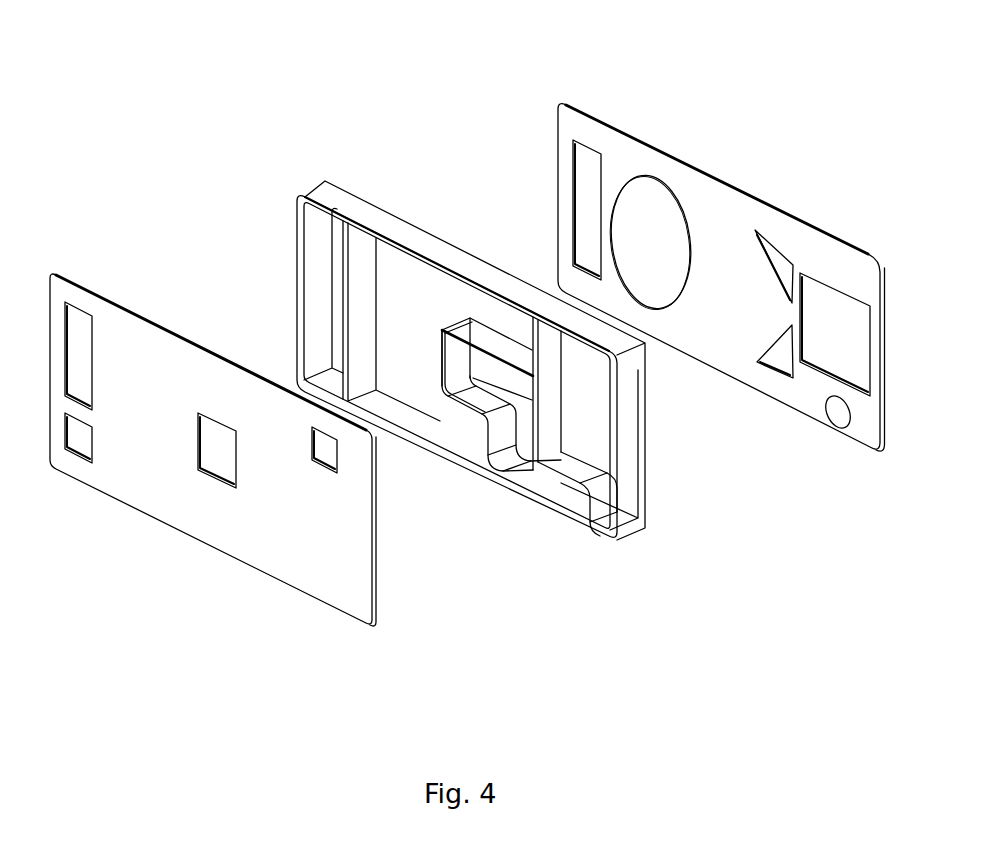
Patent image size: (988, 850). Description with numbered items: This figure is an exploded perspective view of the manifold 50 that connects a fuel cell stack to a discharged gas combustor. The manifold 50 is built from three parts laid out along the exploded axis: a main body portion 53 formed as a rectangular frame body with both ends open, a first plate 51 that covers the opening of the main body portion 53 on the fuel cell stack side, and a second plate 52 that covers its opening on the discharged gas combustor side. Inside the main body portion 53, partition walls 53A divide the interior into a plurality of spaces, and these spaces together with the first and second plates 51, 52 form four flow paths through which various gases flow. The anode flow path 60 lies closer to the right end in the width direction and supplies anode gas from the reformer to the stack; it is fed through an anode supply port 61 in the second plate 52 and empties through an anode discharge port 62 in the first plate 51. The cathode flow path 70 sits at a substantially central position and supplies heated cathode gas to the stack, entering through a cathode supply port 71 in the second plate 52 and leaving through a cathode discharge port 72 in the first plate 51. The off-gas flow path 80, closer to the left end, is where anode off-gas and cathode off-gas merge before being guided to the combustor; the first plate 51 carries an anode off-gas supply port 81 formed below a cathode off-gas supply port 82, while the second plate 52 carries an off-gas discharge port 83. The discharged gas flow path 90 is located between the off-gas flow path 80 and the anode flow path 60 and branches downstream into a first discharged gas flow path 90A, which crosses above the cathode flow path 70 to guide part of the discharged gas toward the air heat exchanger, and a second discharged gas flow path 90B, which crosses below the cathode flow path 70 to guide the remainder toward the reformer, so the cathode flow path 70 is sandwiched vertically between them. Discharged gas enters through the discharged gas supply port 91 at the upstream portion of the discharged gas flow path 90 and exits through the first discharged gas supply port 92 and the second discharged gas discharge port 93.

The manifold 50 is at (302, 125).
The first plate 51 is at (150, 313).
The second plate 52 is at (726, 175).
The main body portion 53 is at (347, 181).
The partition walls 53A is at (550, 355).
The anode flow path 60 is at (595, 423).
The anode supply port 61 is at (837, 322).
The anode discharge port 62 is at (325, 455).
The cathode flow path 70 is at (618, 470).
The cathode supply port 71 is at (778, 362).
The cathode discharge port 72 is at (218, 468).
The off-gas flow path 80 is at (310, 257).
The anode off-gas supply port 81 is at (83, 440).
The cathode off-gas supply port 82 is at (78, 327).
The off-gas discharge port 83 is at (590, 158).
The discharged gas flow path 90 is at (445, 415).
The first discharged gas flow path 90A is at (503, 323).
The second discharged gas flow path 90B is at (563, 483).
The discharged gas supply port 91 is at (652, 200).
The first discharged gas supply port 92 is at (780, 250).
The second discharged gas discharge port 93 is at (843, 422).